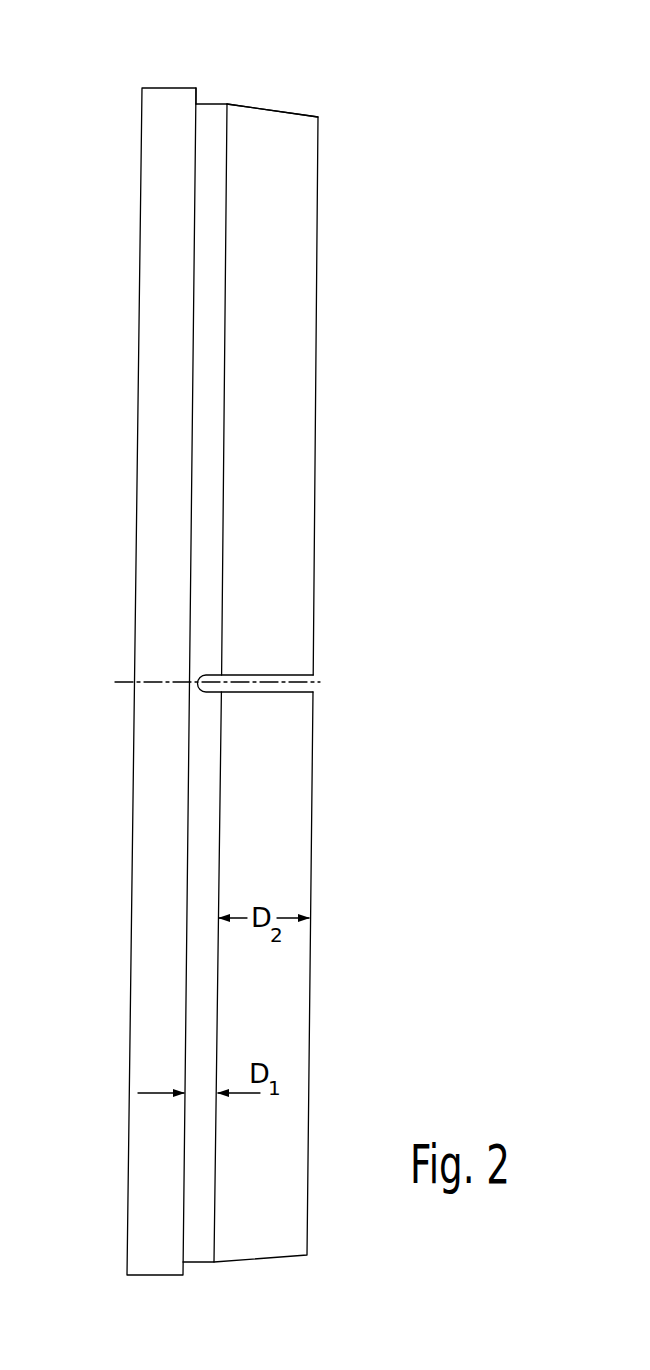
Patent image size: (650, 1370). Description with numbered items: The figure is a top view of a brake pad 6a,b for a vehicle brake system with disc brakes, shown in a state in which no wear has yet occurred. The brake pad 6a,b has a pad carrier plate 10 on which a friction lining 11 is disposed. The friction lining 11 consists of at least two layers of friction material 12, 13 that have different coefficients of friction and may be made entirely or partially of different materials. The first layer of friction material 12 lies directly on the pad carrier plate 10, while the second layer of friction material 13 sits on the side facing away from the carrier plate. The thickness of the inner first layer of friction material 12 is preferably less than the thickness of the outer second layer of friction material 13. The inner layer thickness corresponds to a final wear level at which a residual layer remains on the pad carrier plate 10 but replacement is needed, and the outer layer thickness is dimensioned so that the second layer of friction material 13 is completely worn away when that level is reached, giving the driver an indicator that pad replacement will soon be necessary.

The pad carrier plate 10 is at (162, 142).
The first layer of friction material 12 is at (212, 168).
The second layer of friction material 13 is at (277, 377).
The brake pad 6a,b is at (203, 87).
The friction lining 11 is at (263, 109).